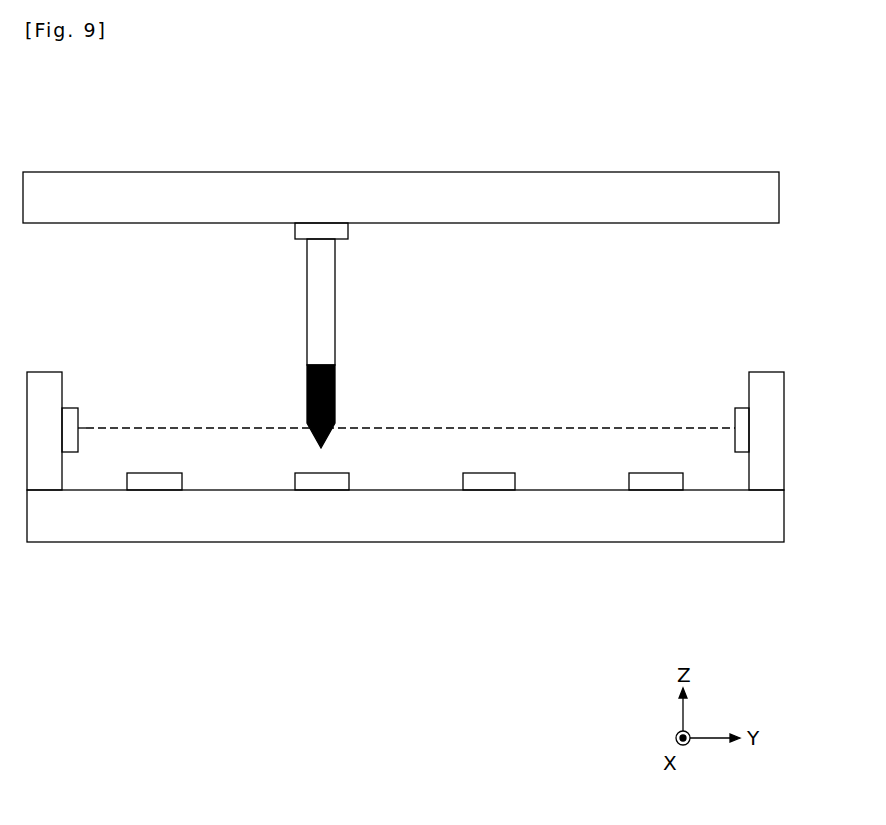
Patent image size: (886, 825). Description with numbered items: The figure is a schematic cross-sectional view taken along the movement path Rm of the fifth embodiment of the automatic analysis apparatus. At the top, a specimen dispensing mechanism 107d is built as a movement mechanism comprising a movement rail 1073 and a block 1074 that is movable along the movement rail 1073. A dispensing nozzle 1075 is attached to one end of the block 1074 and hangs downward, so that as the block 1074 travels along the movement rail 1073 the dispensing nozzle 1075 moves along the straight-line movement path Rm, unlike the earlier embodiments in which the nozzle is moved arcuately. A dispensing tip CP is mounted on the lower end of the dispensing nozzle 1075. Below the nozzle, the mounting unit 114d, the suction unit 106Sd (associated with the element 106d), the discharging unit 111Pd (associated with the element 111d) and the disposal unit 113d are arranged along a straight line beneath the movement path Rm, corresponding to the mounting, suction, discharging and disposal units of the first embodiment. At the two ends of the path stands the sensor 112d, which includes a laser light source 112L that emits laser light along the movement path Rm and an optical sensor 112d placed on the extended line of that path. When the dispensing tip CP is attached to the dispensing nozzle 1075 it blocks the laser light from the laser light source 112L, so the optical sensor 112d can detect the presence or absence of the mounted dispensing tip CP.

The specimen dispensing mechanism 107d is at (401, 263).
The movement rail 1073 is at (697, 175).
The block 1074 is at (348, 228).
The dispensing nozzle 1075 is at (335, 315).
The dispensing tip CP is at (335, 395).
The movement path Rm is at (553, 427).
The laser light source 112L is at (70, 408).
The sensor 112d is at (745, 408).
The mounting unit 114d is at (152, 482).
The suction unit 106Sd is at (332, 557).
The sample stage 106d is at (320, 482).
The discharging unit 111Pd is at (499, 557).
The pedestal 111d is at (490, 482).
The disposal unit 113d is at (656, 482).